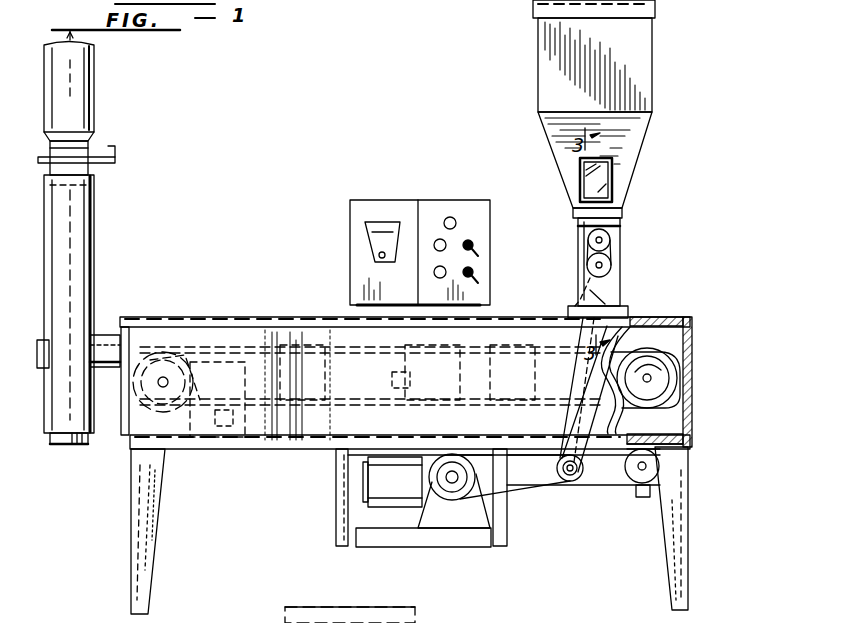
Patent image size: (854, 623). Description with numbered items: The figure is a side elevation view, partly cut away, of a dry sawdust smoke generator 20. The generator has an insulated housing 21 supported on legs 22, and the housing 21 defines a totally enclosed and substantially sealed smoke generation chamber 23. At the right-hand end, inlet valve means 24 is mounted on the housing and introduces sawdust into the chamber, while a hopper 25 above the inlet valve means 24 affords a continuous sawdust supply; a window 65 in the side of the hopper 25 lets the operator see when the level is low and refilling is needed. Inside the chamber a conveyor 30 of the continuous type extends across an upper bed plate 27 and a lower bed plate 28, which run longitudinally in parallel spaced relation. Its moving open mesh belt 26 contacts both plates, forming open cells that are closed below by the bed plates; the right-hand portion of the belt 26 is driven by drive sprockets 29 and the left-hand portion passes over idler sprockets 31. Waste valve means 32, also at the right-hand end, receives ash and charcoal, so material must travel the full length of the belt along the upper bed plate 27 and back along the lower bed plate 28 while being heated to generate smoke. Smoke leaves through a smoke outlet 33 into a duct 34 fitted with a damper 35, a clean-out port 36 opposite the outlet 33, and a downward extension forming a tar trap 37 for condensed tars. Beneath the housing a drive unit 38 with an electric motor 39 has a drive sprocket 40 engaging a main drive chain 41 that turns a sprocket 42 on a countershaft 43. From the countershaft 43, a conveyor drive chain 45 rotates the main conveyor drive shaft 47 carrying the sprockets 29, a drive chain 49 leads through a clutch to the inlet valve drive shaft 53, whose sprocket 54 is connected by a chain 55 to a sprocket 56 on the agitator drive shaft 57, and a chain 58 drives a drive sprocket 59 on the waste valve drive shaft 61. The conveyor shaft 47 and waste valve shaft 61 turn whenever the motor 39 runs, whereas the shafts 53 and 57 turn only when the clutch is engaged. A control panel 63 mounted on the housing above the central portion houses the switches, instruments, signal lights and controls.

The smoke generator 20 is at (290, 305).
The housing 21 is at (230, 450).
The legs 22 is at (147, 528).
The smoke generation chamber 23 is at (668, 353).
The inlet valve means 24 is at (618, 262).
The hopper 25 is at (637, 82).
The open mesh belt 26 is at (640, 380).
The upper bed plate 27 is at (455, 358).
The lower bed plate 28 is at (385, 400).
The drive sprockets 29 is at (652, 380).
The conveyor 30 is at (648, 396).
The idler sprockets 31 is at (166, 370).
The waste valve means 32 is at (643, 498).
The smoke outlet 33 is at (105, 372).
The duct 34 is at (80, 233).
The damper 35 is at (92, 165).
The clean-out port 36 is at (37, 354).
The tar trap 37 is at (52, 441).
The drive unit 38 is at (456, 522).
The electric motor 39 is at (392, 482).
The drive sprocket 40 is at (450, 492).
The main drive chain 41 is at (530, 492).
The sprocket 42 is at (566, 487).
The countershaft 43 is at (556, 472).
The conveyor drive chain 45 is at (600, 482).
The main conveyor drive shaft 47 is at (668, 388).
The drive chain 49 is at (582, 297).
The inlet valve drive shaft 53 is at (611, 272).
The sprocket 54 is at (607, 300).
The chain 55 is at (614, 258).
The sprocket 56 is at (590, 233).
The agitator drive shaft 57 is at (588, 243).
The chain 58 is at (617, 487).
The drive sprocket 59 is at (648, 470).
The waste valve drive shaft 61 is at (665, 452).
The control panel 63 is at (410, 200).
The window 65 is at (604, 185).